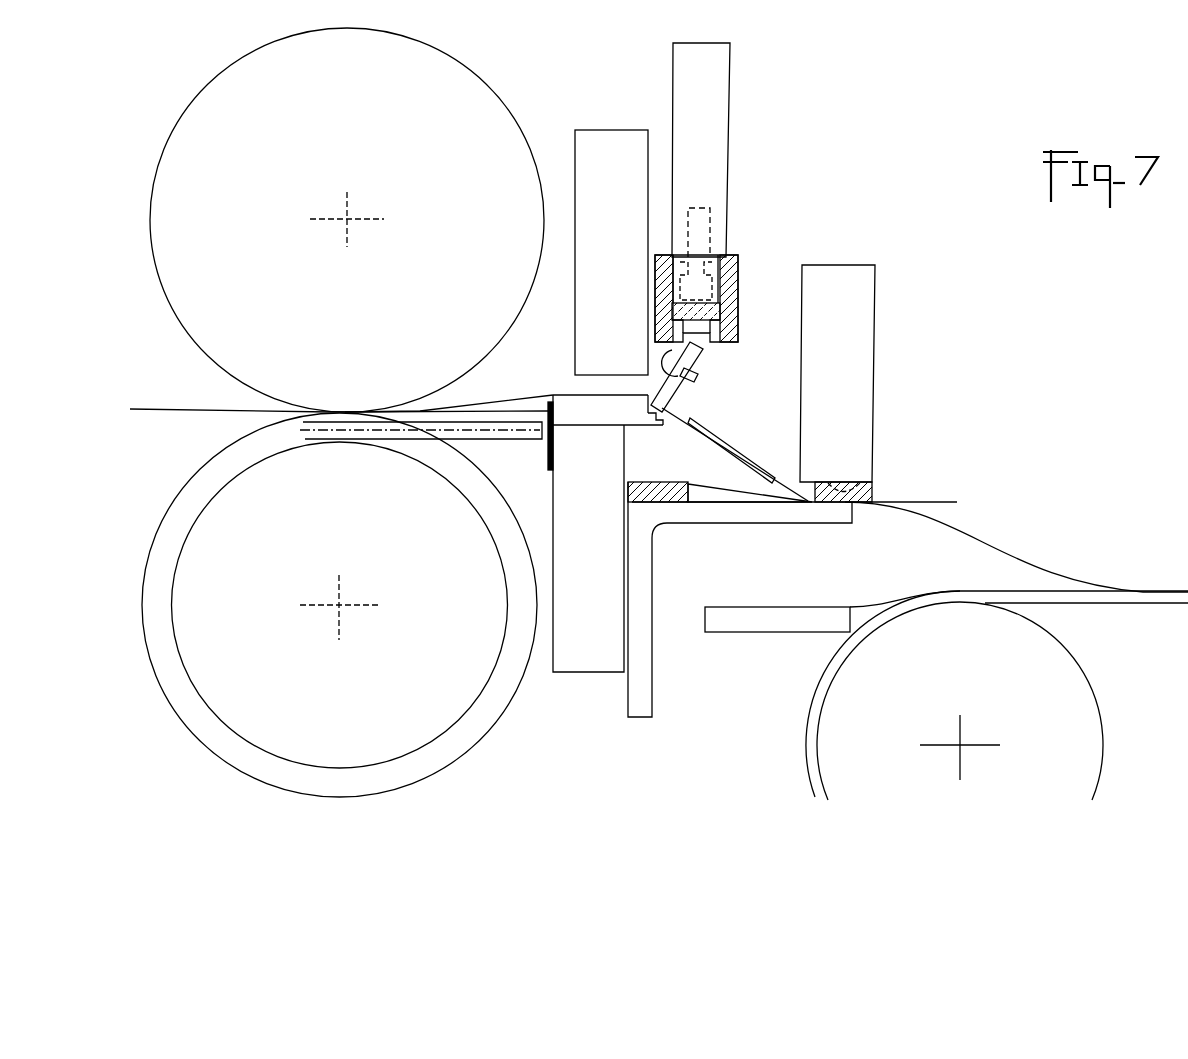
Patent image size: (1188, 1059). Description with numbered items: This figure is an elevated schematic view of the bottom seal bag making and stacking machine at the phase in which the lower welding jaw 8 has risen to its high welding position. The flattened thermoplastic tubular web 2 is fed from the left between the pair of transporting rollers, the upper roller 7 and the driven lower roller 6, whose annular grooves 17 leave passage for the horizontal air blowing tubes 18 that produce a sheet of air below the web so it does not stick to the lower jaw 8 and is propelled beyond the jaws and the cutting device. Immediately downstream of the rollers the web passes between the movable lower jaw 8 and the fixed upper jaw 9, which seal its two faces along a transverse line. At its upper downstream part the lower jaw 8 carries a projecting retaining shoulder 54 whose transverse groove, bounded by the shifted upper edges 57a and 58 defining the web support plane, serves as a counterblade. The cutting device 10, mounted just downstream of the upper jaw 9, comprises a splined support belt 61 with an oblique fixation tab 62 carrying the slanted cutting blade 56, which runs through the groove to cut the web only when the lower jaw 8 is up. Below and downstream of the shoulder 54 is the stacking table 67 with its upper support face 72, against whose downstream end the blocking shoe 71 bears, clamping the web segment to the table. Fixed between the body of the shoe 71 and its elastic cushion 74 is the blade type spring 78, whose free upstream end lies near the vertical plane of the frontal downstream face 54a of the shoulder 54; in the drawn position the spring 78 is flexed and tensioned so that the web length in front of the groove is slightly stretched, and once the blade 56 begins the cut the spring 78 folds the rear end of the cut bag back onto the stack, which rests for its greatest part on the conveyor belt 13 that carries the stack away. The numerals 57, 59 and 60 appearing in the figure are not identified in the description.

The thermoplastic tubular web 2 is at (180, 410).
The lower transporting roller 6 is at (258, 693).
The upper transporting roller 7 is at (248, 158).
The lower welding jaw 8 is at (576, 655).
The upper welding jaw 9 is at (618, 259).
The cutting device 10 is at (738, 112).
The conveyor belt 13 is at (1093, 605).
The annular grooves 17 is at (210, 735).
The air blowing tubes 18 is at (472, 437).
The retaining shoulder 54 is at (656, 426).
The frontal downstream face of retaining shoulder 54a is at (668, 424).
The cutting blade 56 is at (655, 400).
The knife 57 is at (665, 408).
The upper edge of transverse groove 57a is at (653, 405).
The upper edge of transverse groove 58 is at (642, 410).
The web path 59 is at (623, 428).
The guide plate 60 is at (553, 470).
The splined support belt 61 is at (715, 310).
The oblique fixation tab 62 is at (708, 340).
The stacking table 67 is at (700, 598).
The blocking shoe 71 is at (858, 302).
The upper support face of stacking table 72 is at (712, 490).
The elastic cushion of blocking shoe 74 is at (865, 488).
The blade type spring 78 is at (770, 478).